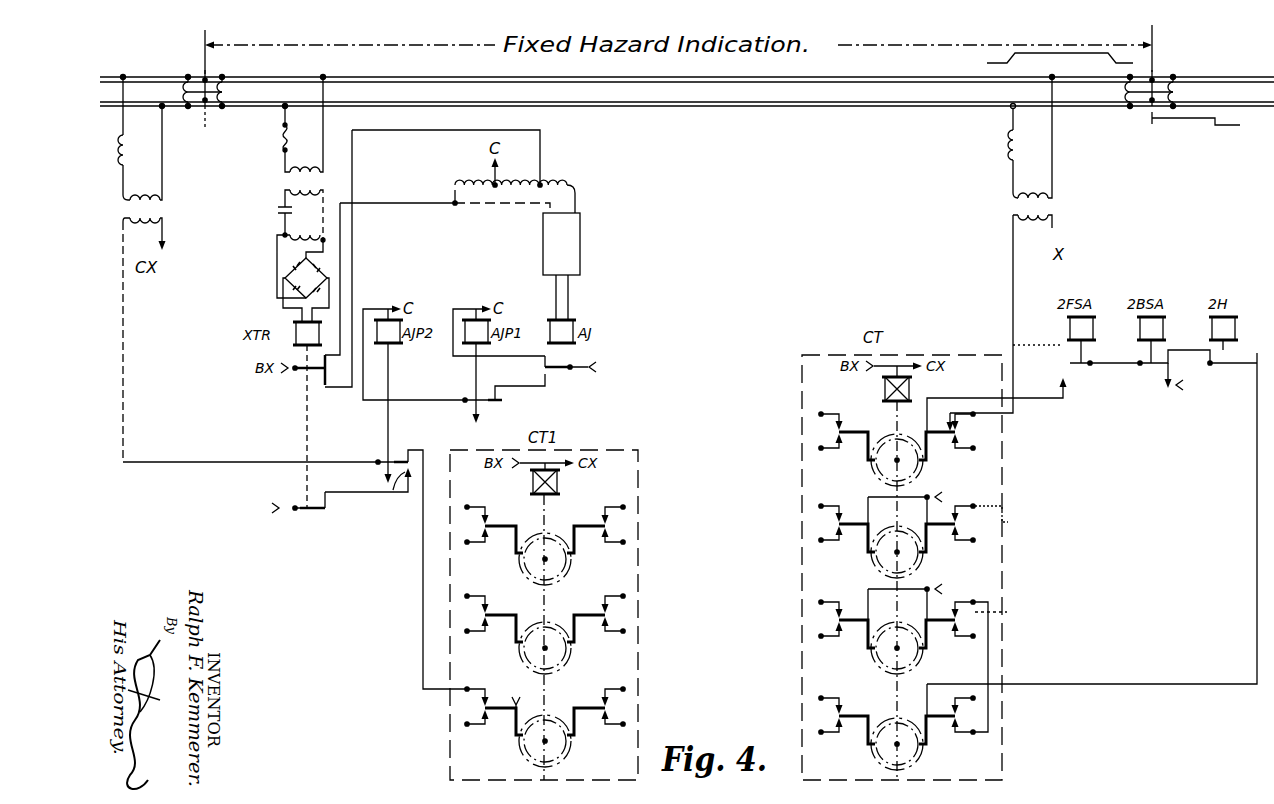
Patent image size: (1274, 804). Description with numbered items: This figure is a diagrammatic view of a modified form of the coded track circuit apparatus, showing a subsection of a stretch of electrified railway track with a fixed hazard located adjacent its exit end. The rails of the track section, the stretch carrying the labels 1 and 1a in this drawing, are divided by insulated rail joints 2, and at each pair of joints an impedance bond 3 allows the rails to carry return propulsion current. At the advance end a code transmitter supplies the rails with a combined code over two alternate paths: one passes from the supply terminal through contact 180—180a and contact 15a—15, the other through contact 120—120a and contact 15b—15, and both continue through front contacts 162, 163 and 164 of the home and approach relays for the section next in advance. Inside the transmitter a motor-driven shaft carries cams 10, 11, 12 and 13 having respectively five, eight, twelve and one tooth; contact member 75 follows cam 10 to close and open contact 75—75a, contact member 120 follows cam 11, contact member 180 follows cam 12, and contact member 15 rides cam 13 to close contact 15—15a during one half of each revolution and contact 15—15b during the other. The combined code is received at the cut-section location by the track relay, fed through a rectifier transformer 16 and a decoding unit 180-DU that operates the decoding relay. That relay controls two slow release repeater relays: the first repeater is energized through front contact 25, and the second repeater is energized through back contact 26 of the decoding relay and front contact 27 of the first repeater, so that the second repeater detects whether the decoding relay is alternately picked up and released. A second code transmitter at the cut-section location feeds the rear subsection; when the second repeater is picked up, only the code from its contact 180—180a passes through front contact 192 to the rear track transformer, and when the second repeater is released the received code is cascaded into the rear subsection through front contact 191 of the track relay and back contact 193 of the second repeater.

The track rails 1 is at (455, 72).
The track section conductor 1a is at (455, 108).
The insulated rail joints 2 is at (1148, 100).
The impedance bond 3 is at (228, 92).
The cam 10 is at (567, 571).
The cam 11 is at (570, 663).
The cam 12 is at (566, 755).
The cam 13 is at (874, 760).
The contact member 15 is at (931, 717).
The contact 15a is at (970, 719).
The contact 15b is at (940, 738).
The rectifier transformer 16 is at (289, 159).
The front contact of relay AJ 25 is at (559, 367).
The back contact of relay AJ 26 is at (546, 381).
The front contact of repeater relay AJP1 27 is at (500, 399).
The contact member 75 is at (953, 447).
The contact 75a is at (980, 325).
The contact member 120 is at (953, 538).
The contact 120a is at (1010, 519).
The front contact of relay 2H 162 is at (1236, 350).
The front contact of relay 2BSA 163 is at (1174, 366).
The front contact of relay 2FSA 164 is at (1083, 350).
The contact member 180 is at (495, 738).
The contact 180a is at (482, 683).
The decoding unit 180-DU is at (597, 266).
The front contact of relay XTR 191 is at (293, 496).
The front contact of relay AJP2 192 is at (295, 560).
The back contact of relay AJP2 193 is at (368, 494).